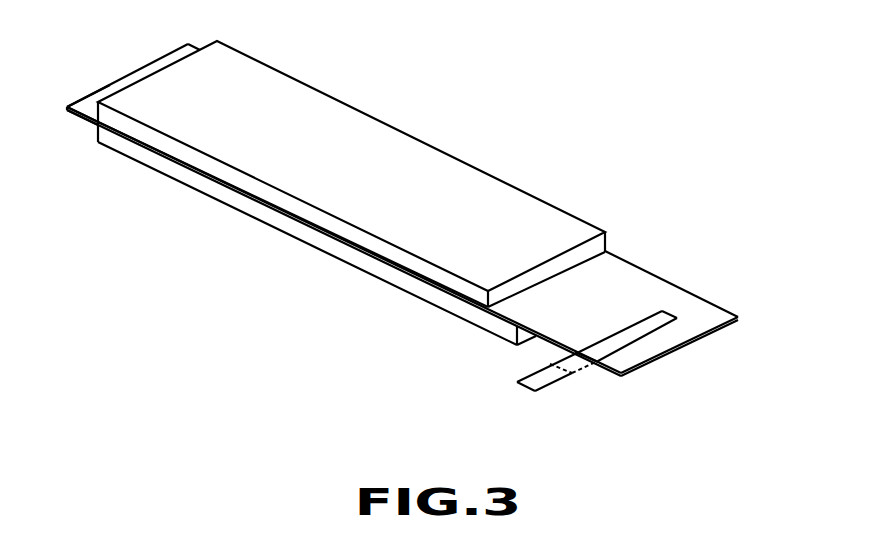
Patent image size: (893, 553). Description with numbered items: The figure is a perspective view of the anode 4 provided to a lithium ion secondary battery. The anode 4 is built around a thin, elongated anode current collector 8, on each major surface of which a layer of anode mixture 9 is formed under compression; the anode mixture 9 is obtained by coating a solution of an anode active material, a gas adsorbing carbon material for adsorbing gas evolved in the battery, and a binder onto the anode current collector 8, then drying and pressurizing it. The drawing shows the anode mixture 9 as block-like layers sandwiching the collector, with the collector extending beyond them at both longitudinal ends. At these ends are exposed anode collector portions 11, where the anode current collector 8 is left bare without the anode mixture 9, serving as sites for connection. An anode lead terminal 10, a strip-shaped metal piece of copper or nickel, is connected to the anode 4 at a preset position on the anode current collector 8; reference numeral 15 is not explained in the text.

The anode 4 is at (390, 50).
The anode current collector 8 is at (632, 275).
The anode mixture layer 9 is at (453, 180).
The anode lead terminal 10 is at (530, 384).
The exposed anode collector portion 11 is at (673, 293).
The sheet corner extension 15 is at (115, 87).